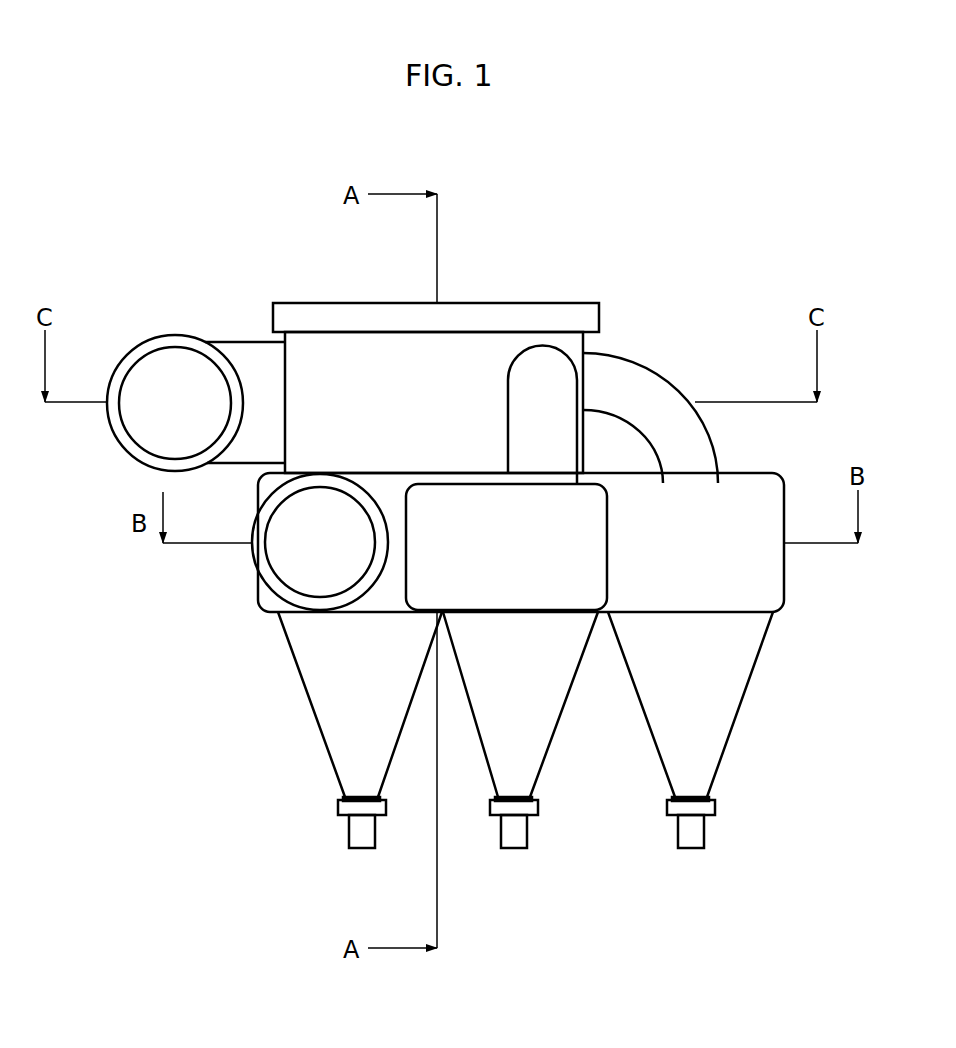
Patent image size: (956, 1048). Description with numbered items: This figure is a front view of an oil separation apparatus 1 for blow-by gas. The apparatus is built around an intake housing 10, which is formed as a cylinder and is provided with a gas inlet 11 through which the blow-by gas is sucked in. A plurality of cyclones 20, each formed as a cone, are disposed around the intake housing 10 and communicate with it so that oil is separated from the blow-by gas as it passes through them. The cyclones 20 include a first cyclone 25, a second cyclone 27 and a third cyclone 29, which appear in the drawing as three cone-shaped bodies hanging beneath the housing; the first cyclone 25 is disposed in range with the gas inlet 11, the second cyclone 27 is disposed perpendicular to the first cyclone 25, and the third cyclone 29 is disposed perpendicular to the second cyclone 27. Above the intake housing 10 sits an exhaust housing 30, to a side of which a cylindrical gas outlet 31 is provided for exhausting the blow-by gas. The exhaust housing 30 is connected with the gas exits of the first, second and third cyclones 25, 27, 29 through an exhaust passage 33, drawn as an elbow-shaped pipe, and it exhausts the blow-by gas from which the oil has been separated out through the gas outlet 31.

The oil separation apparatus 1 is at (603, 272).
The intake housing 10 is at (268, 620).
The gas inlet 11 is at (273, 563).
The cyclones 20 is at (322, 770).
The first cyclone 25 is at (327, 722).
The second cyclone 27 is at (545, 714).
The third cyclone 29 is at (738, 677).
The exhaust housing 30 is at (310, 367).
The gas outlet 31 is at (138, 427).
The exhaust passage 33 is at (658, 405).